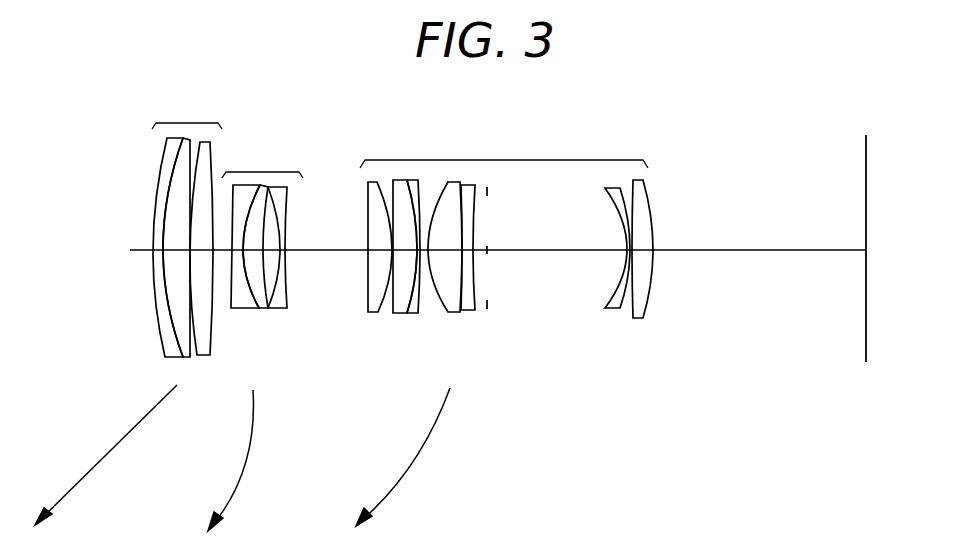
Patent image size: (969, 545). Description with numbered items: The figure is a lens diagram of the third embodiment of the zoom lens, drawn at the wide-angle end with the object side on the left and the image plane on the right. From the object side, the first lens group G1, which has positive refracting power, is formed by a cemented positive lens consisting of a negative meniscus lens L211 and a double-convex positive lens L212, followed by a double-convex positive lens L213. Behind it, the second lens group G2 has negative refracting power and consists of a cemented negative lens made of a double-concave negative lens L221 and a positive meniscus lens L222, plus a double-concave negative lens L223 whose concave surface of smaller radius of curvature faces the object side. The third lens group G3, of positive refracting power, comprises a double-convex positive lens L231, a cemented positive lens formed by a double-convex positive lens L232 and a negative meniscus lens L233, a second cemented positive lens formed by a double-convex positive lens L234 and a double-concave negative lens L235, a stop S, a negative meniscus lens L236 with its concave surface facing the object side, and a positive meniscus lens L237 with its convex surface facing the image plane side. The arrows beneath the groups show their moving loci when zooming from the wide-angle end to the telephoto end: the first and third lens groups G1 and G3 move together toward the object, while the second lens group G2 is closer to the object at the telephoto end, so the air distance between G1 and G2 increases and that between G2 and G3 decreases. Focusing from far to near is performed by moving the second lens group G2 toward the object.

The first lens group G1 is at (187, 111).
The second lens group G2 is at (262, 160).
The third lens group G3 is at (504, 150).
The negative meniscus lens L211 is at (162, 330).
The double-convex positive lens L212 is at (183, 345).
The double-convex positive lens L213 is at (207, 343).
The double-concave negative lens L221 is at (247, 308).
The positive meniscus lens L222 is at (263, 310).
The double-concave negative lens L223 is at (282, 298).
The double-convex positive lens L231 is at (378, 308).
The double-convex positive lens L232 is at (403, 308).
The negative meniscus lens L233 is at (422, 308).
The double-convex positive lens L234 is at (460, 308).
The double-concave negative lens L235 is at (470, 308).
The stop S is at (488, 305).
The negative meniscus lens L236 is at (610, 308).
The positive meniscus lens L237 is at (642, 308).